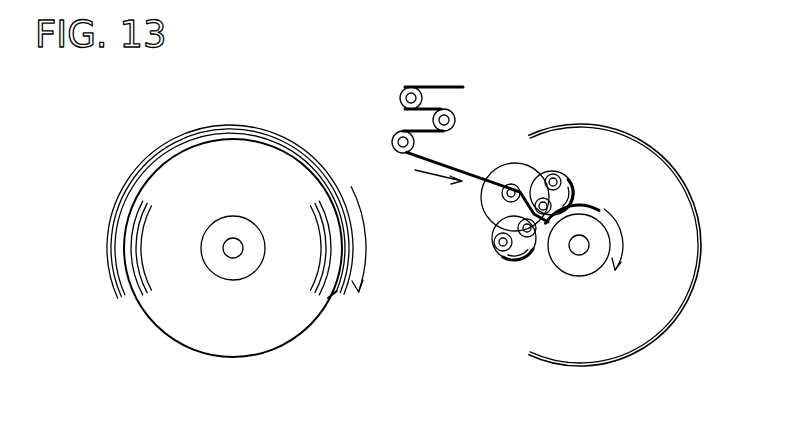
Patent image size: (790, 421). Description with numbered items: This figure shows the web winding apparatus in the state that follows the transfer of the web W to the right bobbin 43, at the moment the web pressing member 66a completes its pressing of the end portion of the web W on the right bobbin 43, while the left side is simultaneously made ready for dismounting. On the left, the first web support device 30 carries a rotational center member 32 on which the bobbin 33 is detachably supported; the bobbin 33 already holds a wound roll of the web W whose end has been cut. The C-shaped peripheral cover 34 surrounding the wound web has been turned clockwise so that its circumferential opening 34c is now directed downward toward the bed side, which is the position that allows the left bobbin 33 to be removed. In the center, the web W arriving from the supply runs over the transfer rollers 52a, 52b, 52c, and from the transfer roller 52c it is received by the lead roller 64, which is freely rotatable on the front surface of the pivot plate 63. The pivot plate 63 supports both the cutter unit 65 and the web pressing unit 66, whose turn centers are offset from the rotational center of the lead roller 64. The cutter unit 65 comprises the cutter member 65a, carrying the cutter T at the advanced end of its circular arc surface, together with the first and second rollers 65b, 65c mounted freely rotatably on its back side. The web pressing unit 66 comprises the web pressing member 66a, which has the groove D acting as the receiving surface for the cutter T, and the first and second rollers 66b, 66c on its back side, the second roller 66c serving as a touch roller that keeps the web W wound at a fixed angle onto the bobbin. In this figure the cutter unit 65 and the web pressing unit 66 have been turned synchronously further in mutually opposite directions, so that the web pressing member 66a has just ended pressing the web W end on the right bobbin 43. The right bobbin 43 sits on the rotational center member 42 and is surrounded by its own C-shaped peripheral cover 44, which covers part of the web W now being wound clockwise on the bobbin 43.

The first web support device 30 is at (171, 128).
The peripheral cover 34 is at (209, 126).
The bobbin 33 is at (216, 216).
The rotational center member 32 is at (223, 246).
The circumferential opening 34c is at (337, 300).
The web W is at (455, 154).
The transfer roller 52a is at (405, 87).
The transfer roller 52b is at (447, 110).
The transfer roller 52c is at (398, 134).
The pivot plate 63 is at (481, 212).
The lead roller 64 is at (507, 172).
The web pressing unit 66 is at (540, 45).
The web pressing member 66a is at (575, 178).
The first roller 66b is at (558, 172).
The second roller 66c is at (527, 172).
The cutter unit 65 is at (548, 397).
The cutter member 65a is at (525, 250).
The first roller 65b is at (536, 252).
The second roller 65c is at (495, 242).
The cutter T is at (522, 262).
The peripheral cover 44 is at (637, 139).
The bobbin 43 is at (600, 210).
The rotational center member 42 is at (589, 245).
The groove D is at (583, 186).